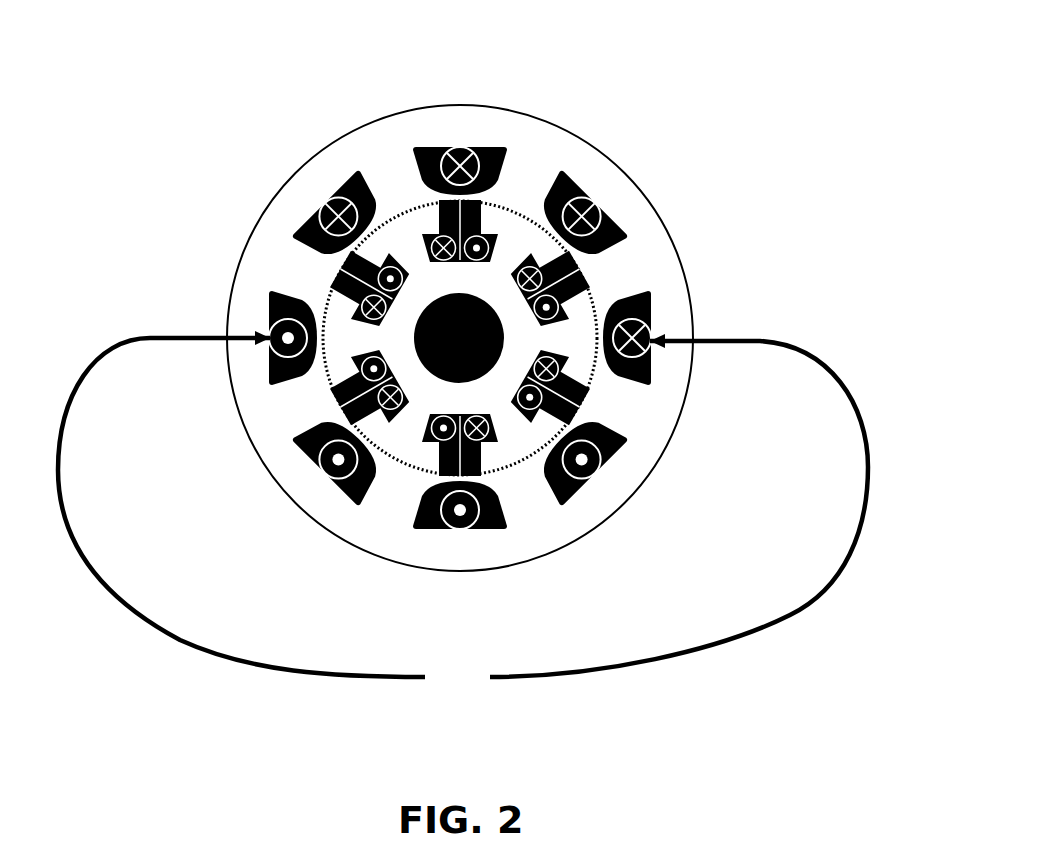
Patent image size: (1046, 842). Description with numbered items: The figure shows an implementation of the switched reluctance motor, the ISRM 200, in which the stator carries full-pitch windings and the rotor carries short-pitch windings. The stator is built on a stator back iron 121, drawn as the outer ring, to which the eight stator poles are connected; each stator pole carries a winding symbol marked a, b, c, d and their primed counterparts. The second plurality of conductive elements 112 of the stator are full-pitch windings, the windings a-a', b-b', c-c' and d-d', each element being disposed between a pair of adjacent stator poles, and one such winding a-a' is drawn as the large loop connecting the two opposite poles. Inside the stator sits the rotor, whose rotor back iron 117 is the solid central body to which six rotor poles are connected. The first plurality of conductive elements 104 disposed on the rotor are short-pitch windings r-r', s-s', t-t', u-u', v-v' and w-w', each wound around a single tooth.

The rotor back iron 117 is at (437, 283).
The ISRM 200 is at (746, 136).
The stator back iron 121 is at (287, 467).
The first plurality of conductive elements 104 is at (542, 323).
The second plurality of conductive elements 112 is at (463, 513).